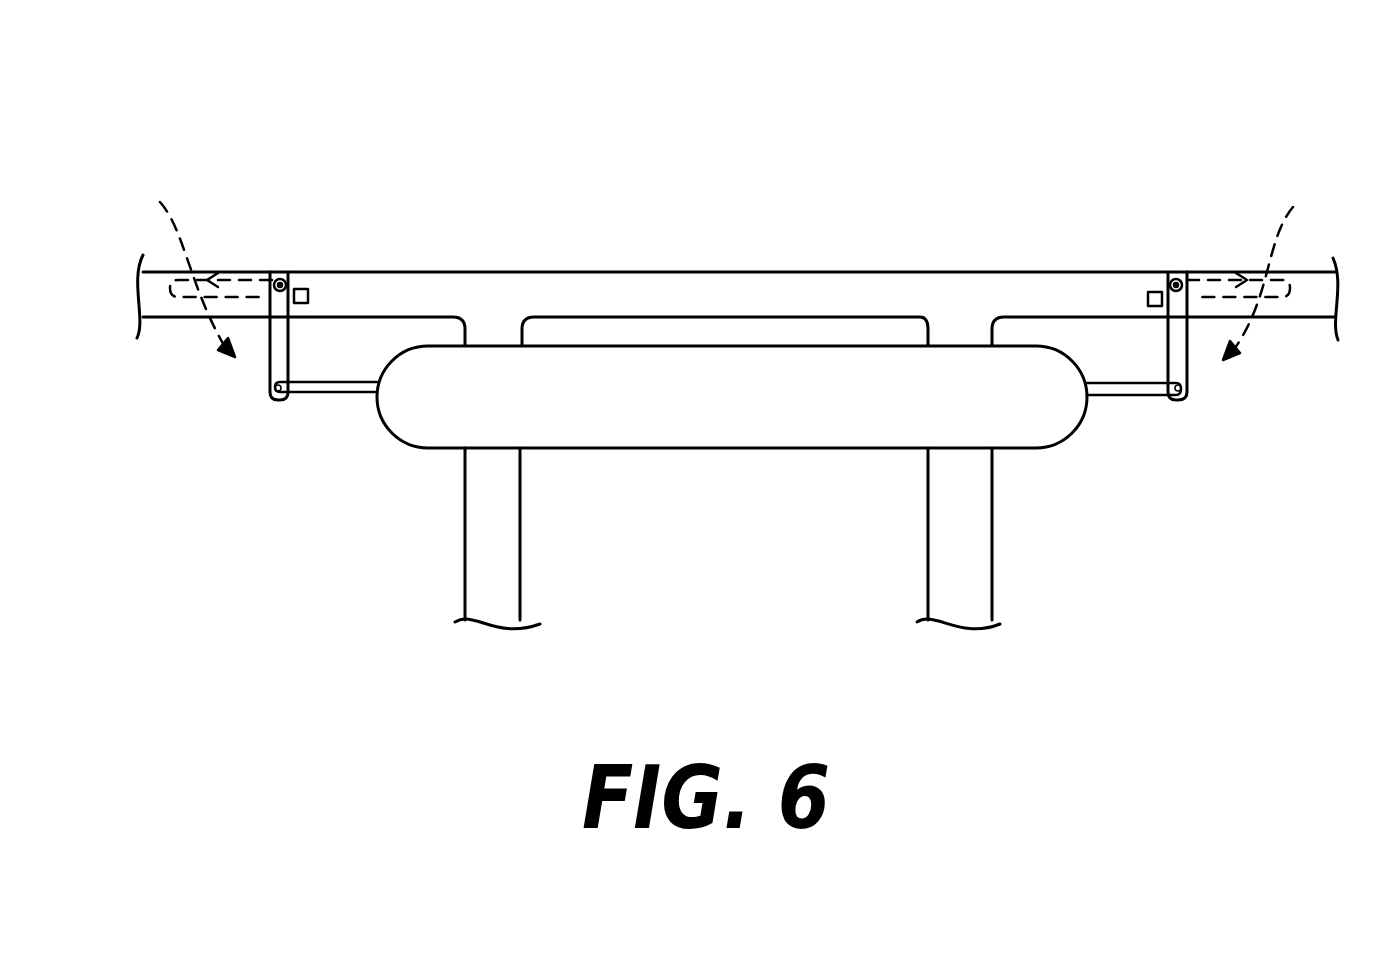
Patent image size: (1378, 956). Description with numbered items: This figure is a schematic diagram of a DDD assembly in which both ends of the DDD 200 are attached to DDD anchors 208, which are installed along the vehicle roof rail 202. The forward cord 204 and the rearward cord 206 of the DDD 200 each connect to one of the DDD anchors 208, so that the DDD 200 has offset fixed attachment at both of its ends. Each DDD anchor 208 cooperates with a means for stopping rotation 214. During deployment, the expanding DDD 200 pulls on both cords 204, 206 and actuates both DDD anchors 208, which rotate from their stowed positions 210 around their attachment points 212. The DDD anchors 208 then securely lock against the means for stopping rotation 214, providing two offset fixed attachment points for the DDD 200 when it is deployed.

The DDD 200 is at (755, 400).
The roof rail 202 is at (597, 292).
The forward cord 204 is at (330, 392).
The rearward cord 206 is at (1127, 395).
The DDD anchor 208 is at (275, 360).
The stowed position 210 is at (730, 270).
The attachment point 212 is at (279, 280).
The means for stopping rotation 214 is at (302, 288).